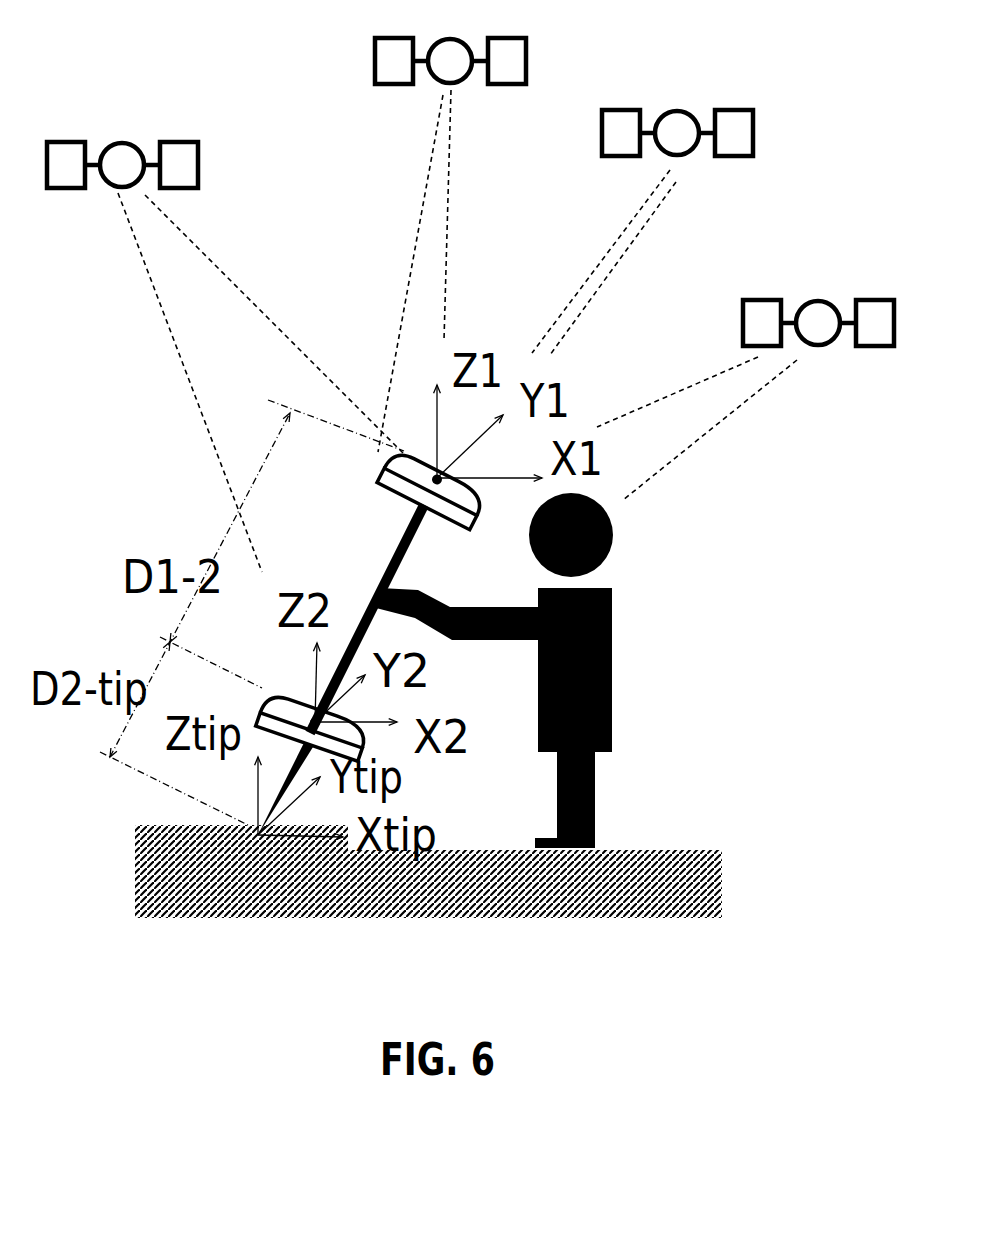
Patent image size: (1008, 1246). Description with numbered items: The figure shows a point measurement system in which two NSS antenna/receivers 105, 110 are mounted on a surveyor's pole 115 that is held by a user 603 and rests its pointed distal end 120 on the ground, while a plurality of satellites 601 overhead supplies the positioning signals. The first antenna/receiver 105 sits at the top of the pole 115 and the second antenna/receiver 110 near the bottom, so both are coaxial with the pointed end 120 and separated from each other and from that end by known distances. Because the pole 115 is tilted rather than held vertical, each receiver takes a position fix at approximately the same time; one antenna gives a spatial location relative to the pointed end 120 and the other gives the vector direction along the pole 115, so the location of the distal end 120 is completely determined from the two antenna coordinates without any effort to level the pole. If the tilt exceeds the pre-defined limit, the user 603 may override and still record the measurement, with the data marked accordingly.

The satellites 601 is at (128, 140).
The NSS antenna/receiver 105 is at (455, 531).
The NSS antenna/receiver 110 is at (362, 751).
The pole 115 is at (390, 558).
The user 603 is at (615, 623).
The distal end 120 is at (281, 918).